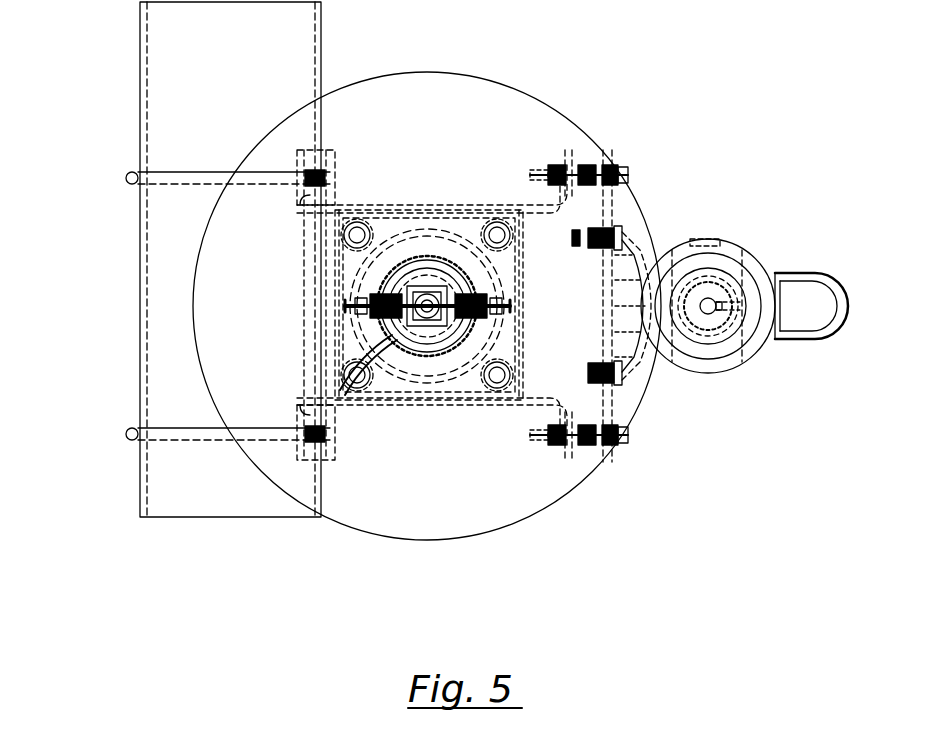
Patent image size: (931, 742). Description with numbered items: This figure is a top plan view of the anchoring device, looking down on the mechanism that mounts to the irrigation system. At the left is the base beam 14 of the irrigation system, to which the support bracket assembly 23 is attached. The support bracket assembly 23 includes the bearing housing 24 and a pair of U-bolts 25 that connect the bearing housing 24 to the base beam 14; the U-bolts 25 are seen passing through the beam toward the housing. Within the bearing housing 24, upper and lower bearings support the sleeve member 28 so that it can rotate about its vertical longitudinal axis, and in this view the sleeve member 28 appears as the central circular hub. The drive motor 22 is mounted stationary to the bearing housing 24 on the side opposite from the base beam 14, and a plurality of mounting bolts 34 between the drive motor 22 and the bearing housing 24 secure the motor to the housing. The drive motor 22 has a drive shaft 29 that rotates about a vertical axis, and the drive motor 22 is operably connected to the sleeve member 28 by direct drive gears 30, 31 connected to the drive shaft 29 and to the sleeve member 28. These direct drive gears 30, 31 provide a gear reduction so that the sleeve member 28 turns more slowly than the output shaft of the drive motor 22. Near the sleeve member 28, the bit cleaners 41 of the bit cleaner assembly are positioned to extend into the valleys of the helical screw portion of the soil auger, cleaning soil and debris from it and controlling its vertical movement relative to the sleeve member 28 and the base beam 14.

The base beam 14 is at (172, 100).
The drive motor 22 is at (757, 240).
The support bracket assembly 23 is at (425, 405).
The bearing housing 24 is at (403, 393).
The U-bolts 25 is at (180, 180).
The sleeve member 28 is at (432, 320).
The drive shaft 29 is at (710, 300).
The direct drive gear 30 is at (757, 282).
The direct drive gear 31 is at (518, 98).
The mounting bolts 34 is at (583, 170).
The bit cleaners 41 is at (472, 290).